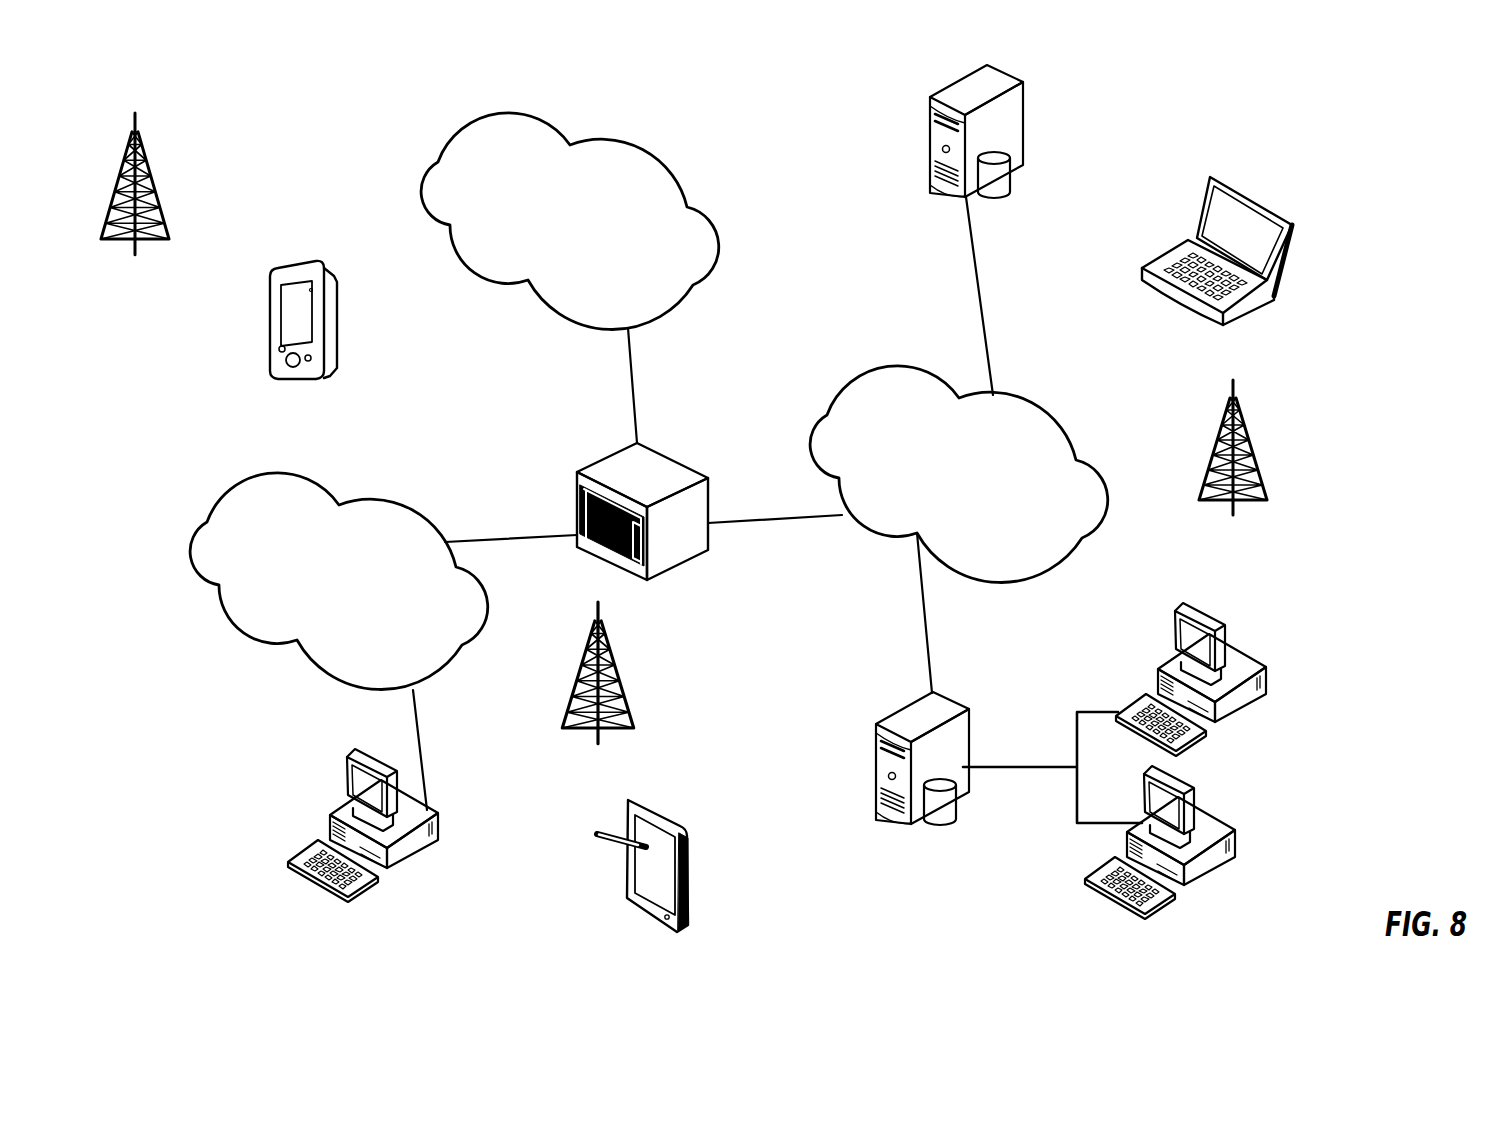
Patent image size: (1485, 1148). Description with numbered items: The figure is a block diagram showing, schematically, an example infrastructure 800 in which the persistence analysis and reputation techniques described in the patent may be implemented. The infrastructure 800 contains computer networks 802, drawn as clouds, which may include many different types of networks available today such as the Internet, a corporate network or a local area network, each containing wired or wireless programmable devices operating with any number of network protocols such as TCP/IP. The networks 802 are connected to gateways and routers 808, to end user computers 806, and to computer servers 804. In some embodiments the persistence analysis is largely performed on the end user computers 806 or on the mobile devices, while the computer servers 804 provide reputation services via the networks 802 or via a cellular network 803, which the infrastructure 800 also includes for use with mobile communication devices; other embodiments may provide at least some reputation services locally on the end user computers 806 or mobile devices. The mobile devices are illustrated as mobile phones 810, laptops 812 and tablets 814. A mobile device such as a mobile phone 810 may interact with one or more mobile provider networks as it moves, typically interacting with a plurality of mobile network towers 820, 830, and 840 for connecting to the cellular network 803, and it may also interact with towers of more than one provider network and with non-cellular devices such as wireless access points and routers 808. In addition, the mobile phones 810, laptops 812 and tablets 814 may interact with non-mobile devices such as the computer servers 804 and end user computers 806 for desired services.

The infrastructure 800 is at (1120, 167).
The computer networks 802 is at (323, 490).
The cellular network 803 is at (627, 148).
The computer servers 804 is at (935, 122).
The end user computers 806 is at (438, 813).
The gateways and routers 808 is at (667, 455).
The mobile phones 810 is at (310, 272).
The laptops 812 is at (1263, 207).
The tablets 814 is at (673, 817).
The mobile network tower 820 is at (597, 689).
The mobile network tower 830 is at (1233, 467).
The mobile network tower 840 is at (135, 201).